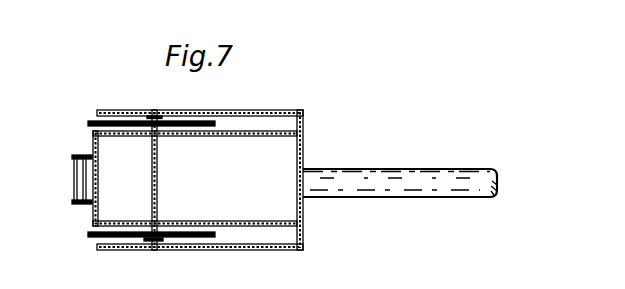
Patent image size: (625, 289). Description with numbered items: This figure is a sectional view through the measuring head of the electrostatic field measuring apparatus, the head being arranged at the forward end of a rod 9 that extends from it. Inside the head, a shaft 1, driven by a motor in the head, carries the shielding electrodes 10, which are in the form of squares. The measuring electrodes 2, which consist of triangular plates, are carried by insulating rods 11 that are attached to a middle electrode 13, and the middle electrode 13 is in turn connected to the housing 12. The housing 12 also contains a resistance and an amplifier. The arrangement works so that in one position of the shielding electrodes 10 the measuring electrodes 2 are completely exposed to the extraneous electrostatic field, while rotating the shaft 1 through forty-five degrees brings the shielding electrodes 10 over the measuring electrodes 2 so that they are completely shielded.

The shaft 1 is at (154, 175).
The measuring electrodes 2 is at (73, 155).
The rod 9 is at (408, 182).
The shielding electrodes 10 is at (88, 121).
The insulating rods 11 is at (72, 168).
The housing 12 is at (91, 141).
The middle electrode 13 is at (75, 180).